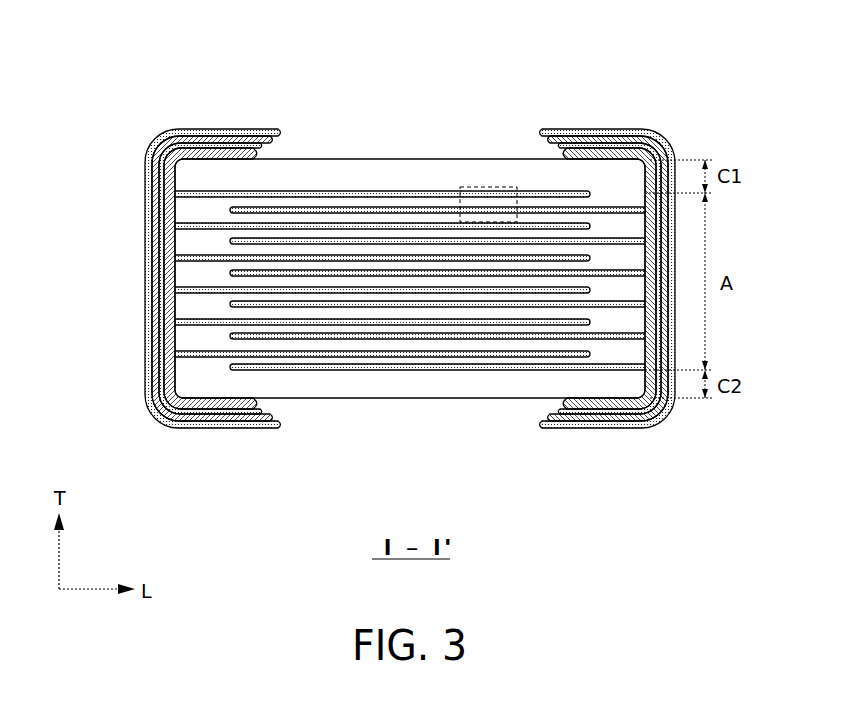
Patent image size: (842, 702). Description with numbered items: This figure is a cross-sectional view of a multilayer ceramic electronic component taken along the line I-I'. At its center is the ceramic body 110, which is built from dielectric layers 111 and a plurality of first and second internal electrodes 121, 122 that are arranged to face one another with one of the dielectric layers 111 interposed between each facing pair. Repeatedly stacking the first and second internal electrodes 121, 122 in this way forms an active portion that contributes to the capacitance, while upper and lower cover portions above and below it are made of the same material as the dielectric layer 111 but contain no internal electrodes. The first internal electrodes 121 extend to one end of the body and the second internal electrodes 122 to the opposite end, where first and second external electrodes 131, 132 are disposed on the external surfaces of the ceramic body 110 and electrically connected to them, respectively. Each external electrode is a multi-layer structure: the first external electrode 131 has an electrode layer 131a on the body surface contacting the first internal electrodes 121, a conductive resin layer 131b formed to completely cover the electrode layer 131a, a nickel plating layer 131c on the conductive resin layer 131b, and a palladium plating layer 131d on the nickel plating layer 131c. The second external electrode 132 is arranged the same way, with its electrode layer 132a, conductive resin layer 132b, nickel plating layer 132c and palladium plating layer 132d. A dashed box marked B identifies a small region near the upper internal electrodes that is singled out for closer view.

The ceramic body 110 is at (347, 234).
The dielectric layer 111 is at (192, 214).
The first internal electrode 121 is at (297, 184).
The second internal electrode 122 is at (238, 210).
The first external electrode 131 is at (173, 215).
The electrode layer 131a is at (243, 155).
The conductive resin layer 131b is at (217, 146).
The nickel plating layer 131c is at (172, 140).
The palladium plating layer 131d is at (267, 37).
The second external electrode 132 is at (650, 215).
The electrode layer 132a is at (570, 134).
The conductive resin layer 132b is at (600, 146).
The nickel plating layer 132c is at (641, 140).
The palladium plating layer 132d is at (555, 37).
The enlarged region B is at (487, 187).